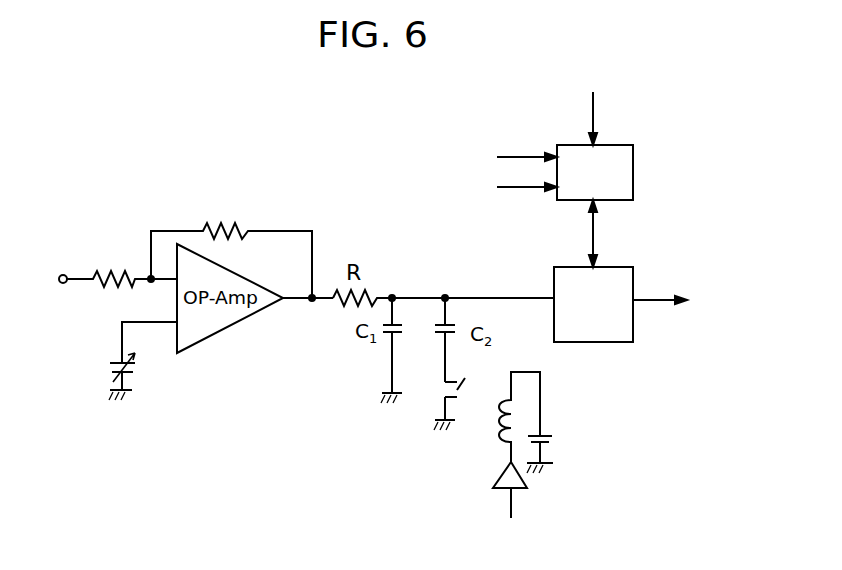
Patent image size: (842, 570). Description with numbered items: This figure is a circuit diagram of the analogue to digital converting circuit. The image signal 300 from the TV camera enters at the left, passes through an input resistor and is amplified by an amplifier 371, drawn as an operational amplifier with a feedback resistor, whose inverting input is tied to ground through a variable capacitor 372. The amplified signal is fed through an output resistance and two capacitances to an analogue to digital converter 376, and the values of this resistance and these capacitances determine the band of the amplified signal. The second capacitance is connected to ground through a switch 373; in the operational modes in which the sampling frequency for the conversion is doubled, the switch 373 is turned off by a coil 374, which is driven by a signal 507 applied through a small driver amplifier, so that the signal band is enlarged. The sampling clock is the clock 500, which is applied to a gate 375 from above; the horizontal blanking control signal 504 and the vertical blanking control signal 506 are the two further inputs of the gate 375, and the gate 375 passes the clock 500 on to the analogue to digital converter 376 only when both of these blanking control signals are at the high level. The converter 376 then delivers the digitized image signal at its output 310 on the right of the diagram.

The image signal 300 is at (90, 271).
The amplifier 371 is at (226, 223).
The variable capacitor 372 is at (108, 380).
The switch 373 is at (435, 393).
The coil 374 is at (497, 433).
The gate 375 is at (635, 168).
The analogue to digital converter 376 is at (623, 265).
The output 310 is at (665, 294).
The clock 500 is at (627, 115).
The horizontal blanking control signal 504 is at (512, 152).
The vertical blanking control signal 506 is at (503, 193).
The signal 507 is at (513, 504).